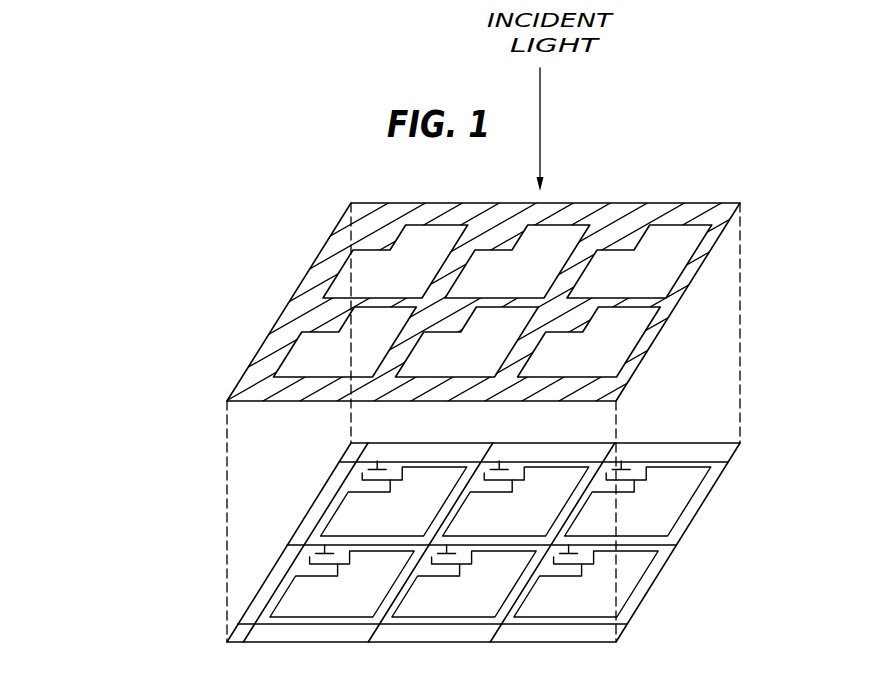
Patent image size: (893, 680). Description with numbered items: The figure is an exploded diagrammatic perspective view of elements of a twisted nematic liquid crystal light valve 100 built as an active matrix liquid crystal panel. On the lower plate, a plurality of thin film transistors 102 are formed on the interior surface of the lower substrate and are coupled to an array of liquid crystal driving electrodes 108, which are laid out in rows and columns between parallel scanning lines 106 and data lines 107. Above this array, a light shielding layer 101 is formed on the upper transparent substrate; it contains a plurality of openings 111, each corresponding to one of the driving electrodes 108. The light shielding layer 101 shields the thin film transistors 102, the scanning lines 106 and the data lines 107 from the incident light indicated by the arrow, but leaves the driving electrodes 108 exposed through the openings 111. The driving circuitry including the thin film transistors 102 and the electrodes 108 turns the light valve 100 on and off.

The light valve 100 is at (775, 163).
The light shielding layer 101 is at (687, 205).
The thin film transistors 102 is at (360, 468).
The scanning lines 106 is at (681, 462).
The data lines 107 is at (368, 457).
The liquid crystal driving electrodes 108 is at (343, 608).
The openings 111 is at (565, 237).